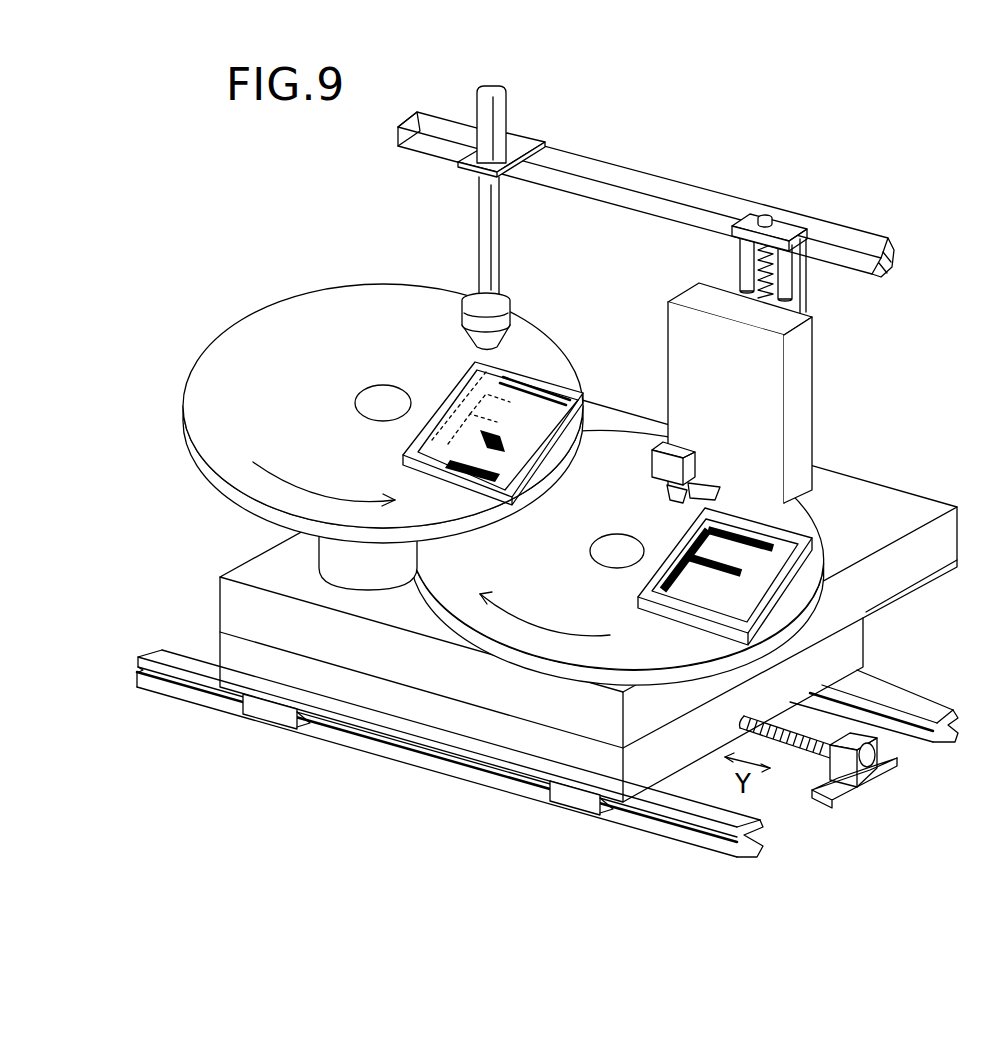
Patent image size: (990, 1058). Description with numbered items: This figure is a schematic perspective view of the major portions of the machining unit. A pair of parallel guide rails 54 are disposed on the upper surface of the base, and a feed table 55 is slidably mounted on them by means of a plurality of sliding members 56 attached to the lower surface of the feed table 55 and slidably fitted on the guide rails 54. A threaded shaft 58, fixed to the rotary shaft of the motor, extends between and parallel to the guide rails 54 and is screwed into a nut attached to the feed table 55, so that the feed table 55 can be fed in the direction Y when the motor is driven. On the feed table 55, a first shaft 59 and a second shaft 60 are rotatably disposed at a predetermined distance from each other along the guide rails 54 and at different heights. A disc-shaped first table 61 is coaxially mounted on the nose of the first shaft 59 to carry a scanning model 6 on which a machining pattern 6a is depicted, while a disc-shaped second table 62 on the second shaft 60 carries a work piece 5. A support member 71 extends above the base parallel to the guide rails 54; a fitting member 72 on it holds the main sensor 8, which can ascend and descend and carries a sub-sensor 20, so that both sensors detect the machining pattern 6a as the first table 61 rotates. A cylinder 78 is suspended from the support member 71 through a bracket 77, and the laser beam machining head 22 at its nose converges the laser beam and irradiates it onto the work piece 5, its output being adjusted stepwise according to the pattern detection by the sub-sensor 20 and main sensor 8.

The work piece 5 is at (547, 382).
The scanning model 6 is at (812, 556).
The machining pattern 6a is at (775, 540).
The main sensor 8 is at (803, 388).
The sub-sensor 20 is at (676, 452).
The laser beam machining head 22 is at (500, 313).
The guide rails 54 is at (908, 705).
The feed table 55 is at (413, 730).
The sliding members 56 is at (270, 715).
The threaded shaft 58 is at (798, 750).
The first shaft 59 is at (623, 541).
The second shaft 60 is at (365, 389).
The first table 61 is at (538, 652).
The second table 62 is at (233, 333).
The support member 71 is at (652, 192).
The fitting member 72 is at (793, 258).
The bracket 77 is at (530, 140).
The cylinder 78 is at (489, 222).